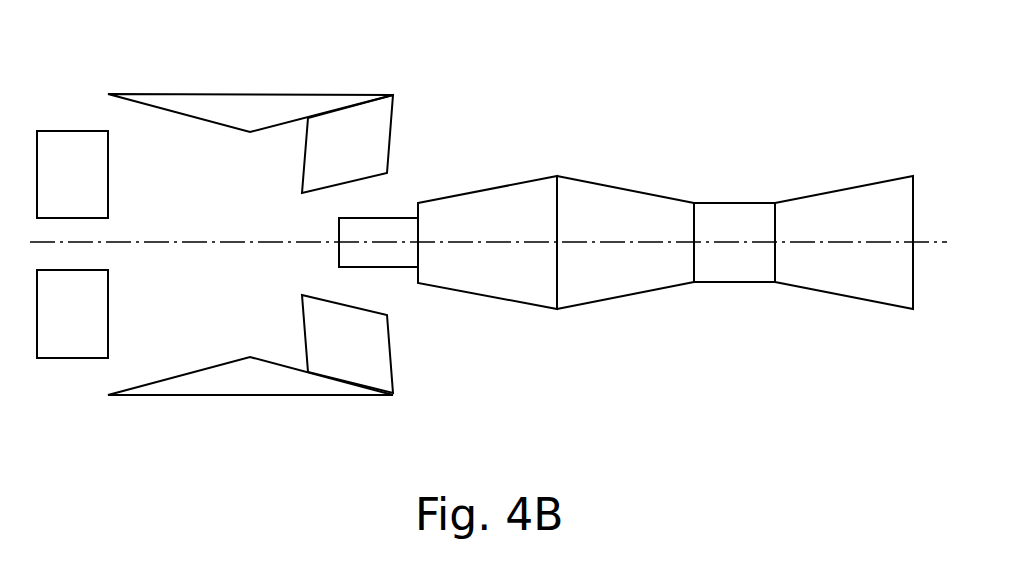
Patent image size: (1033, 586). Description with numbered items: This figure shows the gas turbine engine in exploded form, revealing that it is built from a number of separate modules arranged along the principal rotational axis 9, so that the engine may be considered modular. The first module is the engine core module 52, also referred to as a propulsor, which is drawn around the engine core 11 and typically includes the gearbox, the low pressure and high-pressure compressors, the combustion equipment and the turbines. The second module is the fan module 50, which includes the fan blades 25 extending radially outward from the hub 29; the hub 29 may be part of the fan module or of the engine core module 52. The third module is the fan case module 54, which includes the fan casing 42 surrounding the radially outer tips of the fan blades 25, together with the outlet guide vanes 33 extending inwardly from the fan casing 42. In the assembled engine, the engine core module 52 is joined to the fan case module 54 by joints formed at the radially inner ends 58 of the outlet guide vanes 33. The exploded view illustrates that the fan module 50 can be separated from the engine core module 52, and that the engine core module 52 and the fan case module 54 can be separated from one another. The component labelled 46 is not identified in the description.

The principal rotational axis 9 is at (232, 245).
The engine core 11 is at (727, 222).
The fan blades 25 is at (96, 157).
The hub 29 is at (398, 233).
The outlet guide vanes 33 is at (370, 133).
The fan casing 42 is at (298, 110).
The conical lens section 46 is at (476, 272).
The fan module 50 is at (130, 318).
The engine core module 52 is at (665, 227).
The fan case module 54 is at (250, 105).
The radially inner ends 58 is at (332, 300).